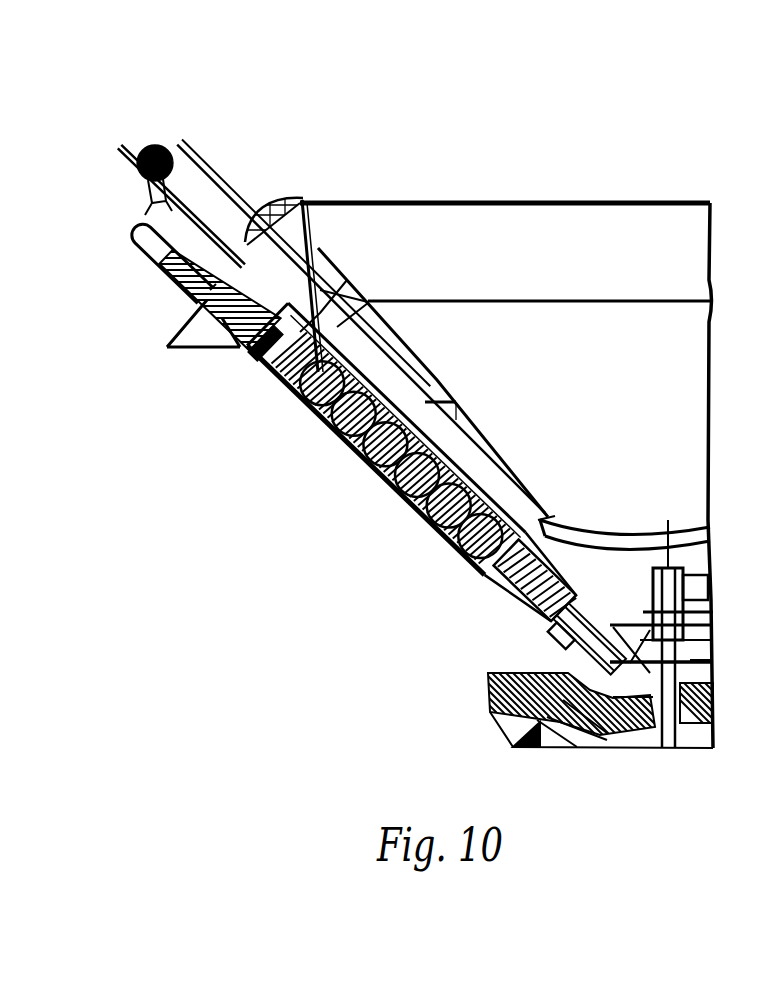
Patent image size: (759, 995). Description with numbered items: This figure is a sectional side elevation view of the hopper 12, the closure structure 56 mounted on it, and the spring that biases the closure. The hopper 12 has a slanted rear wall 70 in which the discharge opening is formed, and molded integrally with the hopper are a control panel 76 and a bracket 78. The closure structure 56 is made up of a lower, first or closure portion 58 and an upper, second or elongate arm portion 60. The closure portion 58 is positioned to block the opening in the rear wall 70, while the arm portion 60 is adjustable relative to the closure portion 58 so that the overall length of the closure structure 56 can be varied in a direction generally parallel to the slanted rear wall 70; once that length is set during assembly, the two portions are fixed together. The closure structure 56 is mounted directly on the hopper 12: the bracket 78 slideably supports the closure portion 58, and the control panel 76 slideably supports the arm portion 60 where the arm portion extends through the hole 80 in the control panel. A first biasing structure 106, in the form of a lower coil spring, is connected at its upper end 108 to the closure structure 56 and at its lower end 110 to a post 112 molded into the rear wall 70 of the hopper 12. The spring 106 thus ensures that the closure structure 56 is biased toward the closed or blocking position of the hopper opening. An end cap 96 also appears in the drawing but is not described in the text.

The hopper 12 is at (480, 197).
The closure structure 56 is at (398, 491).
The closure portion 58 is at (517, 592).
The arm portion 60 is at (237, 343).
The slanted rear wall 70 is at (485, 483).
The control panel 76 is at (282, 212).
The bracket 78 is at (560, 647).
The hole 80 is at (200, 297).
The end cap 96 is at (150, 265).
The first biasing structure 106 is at (452, 448).
The upper end 108 is at (317, 317).
The lower end 110 is at (435, 527).
The post 112 is at (530, 507).